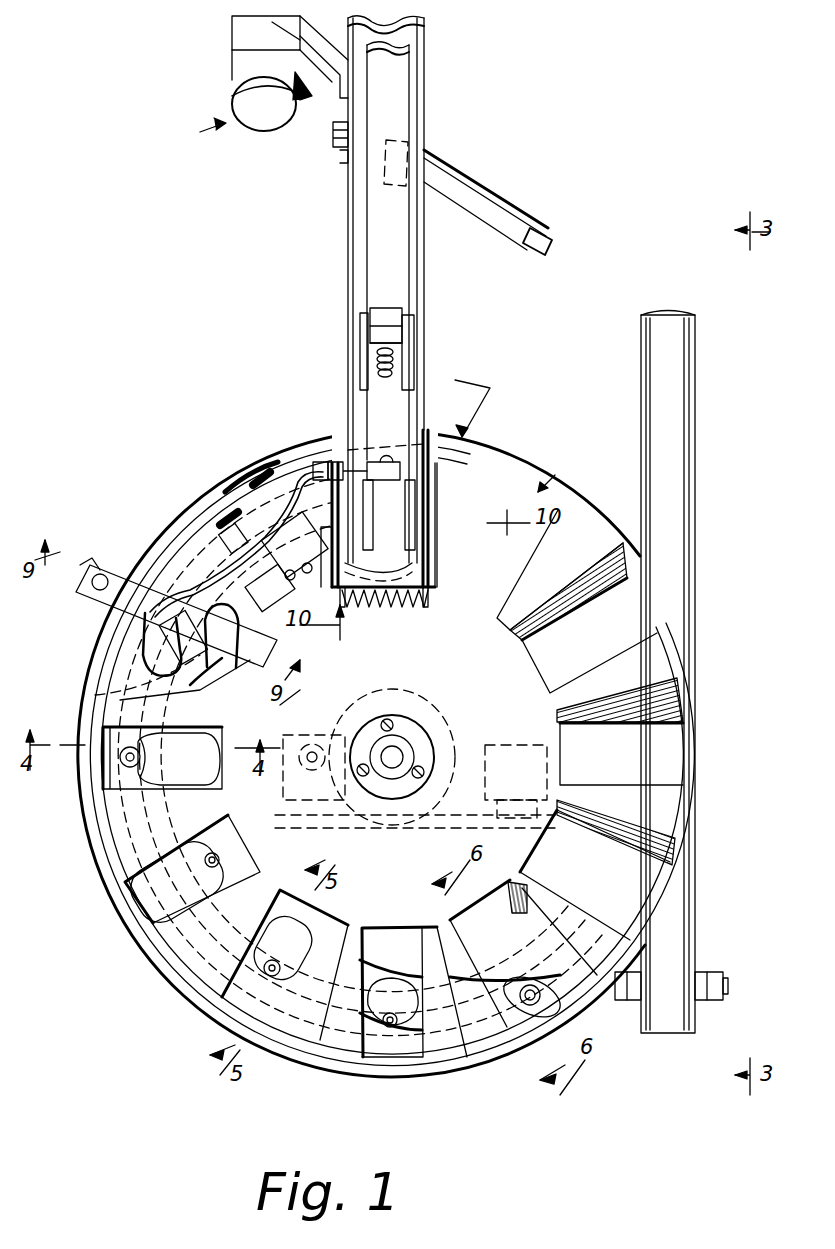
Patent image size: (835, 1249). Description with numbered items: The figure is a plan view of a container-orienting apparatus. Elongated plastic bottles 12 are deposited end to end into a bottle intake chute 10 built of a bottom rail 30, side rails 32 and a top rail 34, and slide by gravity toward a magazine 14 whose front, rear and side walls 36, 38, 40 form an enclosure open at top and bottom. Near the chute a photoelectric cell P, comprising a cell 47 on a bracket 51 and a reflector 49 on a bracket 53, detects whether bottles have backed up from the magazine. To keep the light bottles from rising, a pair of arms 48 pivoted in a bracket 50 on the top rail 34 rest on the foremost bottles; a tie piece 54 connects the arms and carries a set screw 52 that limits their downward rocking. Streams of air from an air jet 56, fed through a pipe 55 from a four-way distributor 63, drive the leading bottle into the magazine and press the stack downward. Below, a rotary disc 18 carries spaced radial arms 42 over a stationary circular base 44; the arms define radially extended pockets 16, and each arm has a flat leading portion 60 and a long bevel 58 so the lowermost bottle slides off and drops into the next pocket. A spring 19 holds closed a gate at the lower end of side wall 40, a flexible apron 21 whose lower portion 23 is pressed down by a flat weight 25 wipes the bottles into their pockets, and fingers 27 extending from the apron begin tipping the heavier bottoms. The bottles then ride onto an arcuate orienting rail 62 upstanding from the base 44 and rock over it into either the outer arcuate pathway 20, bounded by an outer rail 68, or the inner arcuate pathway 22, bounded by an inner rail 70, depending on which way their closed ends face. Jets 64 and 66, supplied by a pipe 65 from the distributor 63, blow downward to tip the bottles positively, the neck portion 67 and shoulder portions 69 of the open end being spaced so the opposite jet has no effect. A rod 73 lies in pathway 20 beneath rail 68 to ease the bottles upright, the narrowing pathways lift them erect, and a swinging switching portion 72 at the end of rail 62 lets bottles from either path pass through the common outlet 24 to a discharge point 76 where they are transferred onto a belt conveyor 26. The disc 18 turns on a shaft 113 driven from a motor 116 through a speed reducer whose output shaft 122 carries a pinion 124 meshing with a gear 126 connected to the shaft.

The bottle intake chute 10 is at (425, 250).
The elongated plastic bottles 12 is at (110, 737).
The magazine 14 is at (465, 394).
The pockets 16 is at (558, 468).
The rotary conveyor disc 18 is at (533, 667).
The spring 19 is at (425, 606).
The outer arcuate pathway 20 is at (118, 845).
The flexible apron 21 is at (262, 470).
The inner arcuate pathway 22 is at (105, 883).
The lower portion of the apron 23 is at (323, 440).
The outlet 24 is at (582, 975).
The weight 25 is at (283, 470).
The discharge conveyor 26 is at (668, 607).
The fingers 27 is at (228, 535).
The bottom rail 30 is at (400, 73).
The side rails 32 is at (424, 100).
The top rail 34 is at (366, 216).
The front wall 36 is at (388, 604).
The rear wall 38 is at (410, 430).
The side walls 40 is at (338, 463).
The radial arms 42 is at (573, 530).
The stationary circular base 44 is at (412, 1070).
The cell 47 is at (232, 92).
The arms 48 is at (412, 338).
The reflector 49 is at (548, 240).
The bracket 50 is at (392, 324).
The bracket 51 is at (300, 40).
The set screw 52 is at (385, 376).
The bracket 53 is at (505, 210).
The tie piece 54 is at (404, 352).
The pipe 55 is at (245, 505).
The air jet 56 is at (389, 503).
The long bevel 58 is at (598, 540).
The flat leading portion 60 is at (585, 522).
The orienting rail 62 is at (92, 694).
The four-way distributor 63 is at (185, 612).
The jet 64 is at (147, 612).
The pipe 65 is at (165, 702).
The jet 66 is at (238, 660).
The central neck portion 67 is at (127, 760).
The outer rail 68 is at (687, 790).
The shoulder portions 69 is at (142, 782).
The inner rail 70 is at (413, 992).
The switching portion 72 is at (517, 1032).
The rod 73 is at (140, 965).
The discharge point 76 is at (697, 722).
The shaft 113 is at (398, 752).
The motor 116 is at (530, 745).
The output shaft 122 is at (288, 778).
The pinion 124 is at (313, 722).
The gear 126 is at (404, 690).
The photoelectric cells P is at (199, 133).